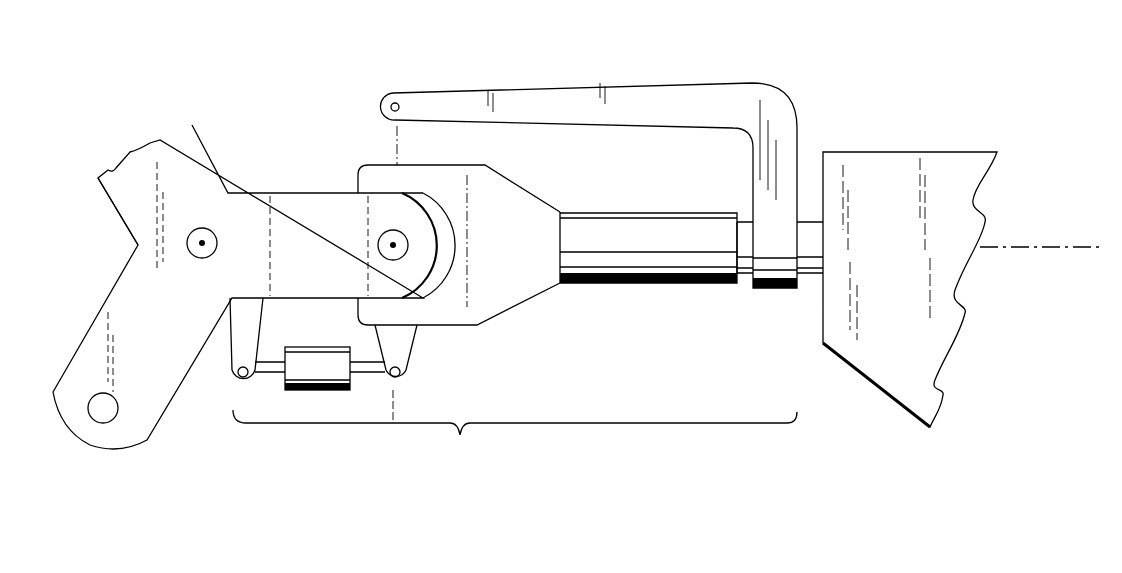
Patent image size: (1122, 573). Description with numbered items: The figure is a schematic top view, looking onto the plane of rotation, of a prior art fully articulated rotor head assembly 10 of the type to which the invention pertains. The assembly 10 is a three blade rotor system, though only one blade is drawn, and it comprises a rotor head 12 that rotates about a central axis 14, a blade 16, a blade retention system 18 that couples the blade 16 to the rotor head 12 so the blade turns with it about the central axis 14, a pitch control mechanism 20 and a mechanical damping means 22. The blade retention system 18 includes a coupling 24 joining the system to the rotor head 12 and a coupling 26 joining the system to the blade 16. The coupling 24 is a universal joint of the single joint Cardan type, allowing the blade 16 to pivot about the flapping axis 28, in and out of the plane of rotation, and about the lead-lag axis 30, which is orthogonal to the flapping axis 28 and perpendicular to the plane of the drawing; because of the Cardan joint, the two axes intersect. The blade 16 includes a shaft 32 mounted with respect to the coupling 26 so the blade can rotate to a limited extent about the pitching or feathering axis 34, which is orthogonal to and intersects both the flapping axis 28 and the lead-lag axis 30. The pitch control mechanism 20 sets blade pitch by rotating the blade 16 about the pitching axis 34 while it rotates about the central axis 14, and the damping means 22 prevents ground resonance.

The fully articulated rotor head assembly 10 is at (598, 83).
The rotor head 12 is at (138, 197).
The central axis 14 is at (204, 244).
The blade 16 is at (962, 170).
The blade retention system 18 is at (515, 315).
The pitch control mechanism 20 is at (712, 103).
The mechanical damping means 22 is at (335, 393).
The coupling 24 is at (380, 237).
The coupling 26 is at (663, 283).
The flapping axis 28 is at (398, 138).
The lead-lag axis 30 is at (396, 245).
The shaft 32 is at (745, 273).
The pitching axis 34 is at (1040, 245).